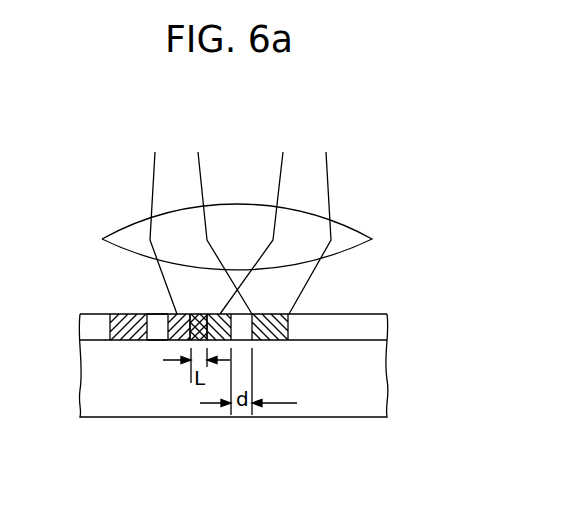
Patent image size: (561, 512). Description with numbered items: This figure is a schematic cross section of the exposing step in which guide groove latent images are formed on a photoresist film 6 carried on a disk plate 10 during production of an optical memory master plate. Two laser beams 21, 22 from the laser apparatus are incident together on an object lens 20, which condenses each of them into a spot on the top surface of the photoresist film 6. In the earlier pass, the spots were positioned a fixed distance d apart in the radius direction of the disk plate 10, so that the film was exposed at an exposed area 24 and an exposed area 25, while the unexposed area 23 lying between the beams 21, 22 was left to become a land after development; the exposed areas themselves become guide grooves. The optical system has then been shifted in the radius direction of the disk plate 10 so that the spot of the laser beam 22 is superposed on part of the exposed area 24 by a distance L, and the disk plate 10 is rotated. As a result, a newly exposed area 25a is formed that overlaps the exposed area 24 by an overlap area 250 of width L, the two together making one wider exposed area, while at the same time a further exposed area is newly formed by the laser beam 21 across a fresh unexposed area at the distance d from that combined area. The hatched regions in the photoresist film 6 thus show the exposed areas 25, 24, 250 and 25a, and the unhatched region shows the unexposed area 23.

The disk plate 10 is at (375, 390).
The photoresist film 6 is at (377, 328).
The exposed area 25 is at (118, 314).
The unexposed area 23 is at (157, 335).
The exposed area 24 is at (179, 314).
The overlap area 250 is at (200, 312).
The newly exposed area 25a is at (218, 314).
The object lens 20 is at (340, 238).
The laser beam 22 is at (174, 177).
The laser beam 21 is at (298, 177).